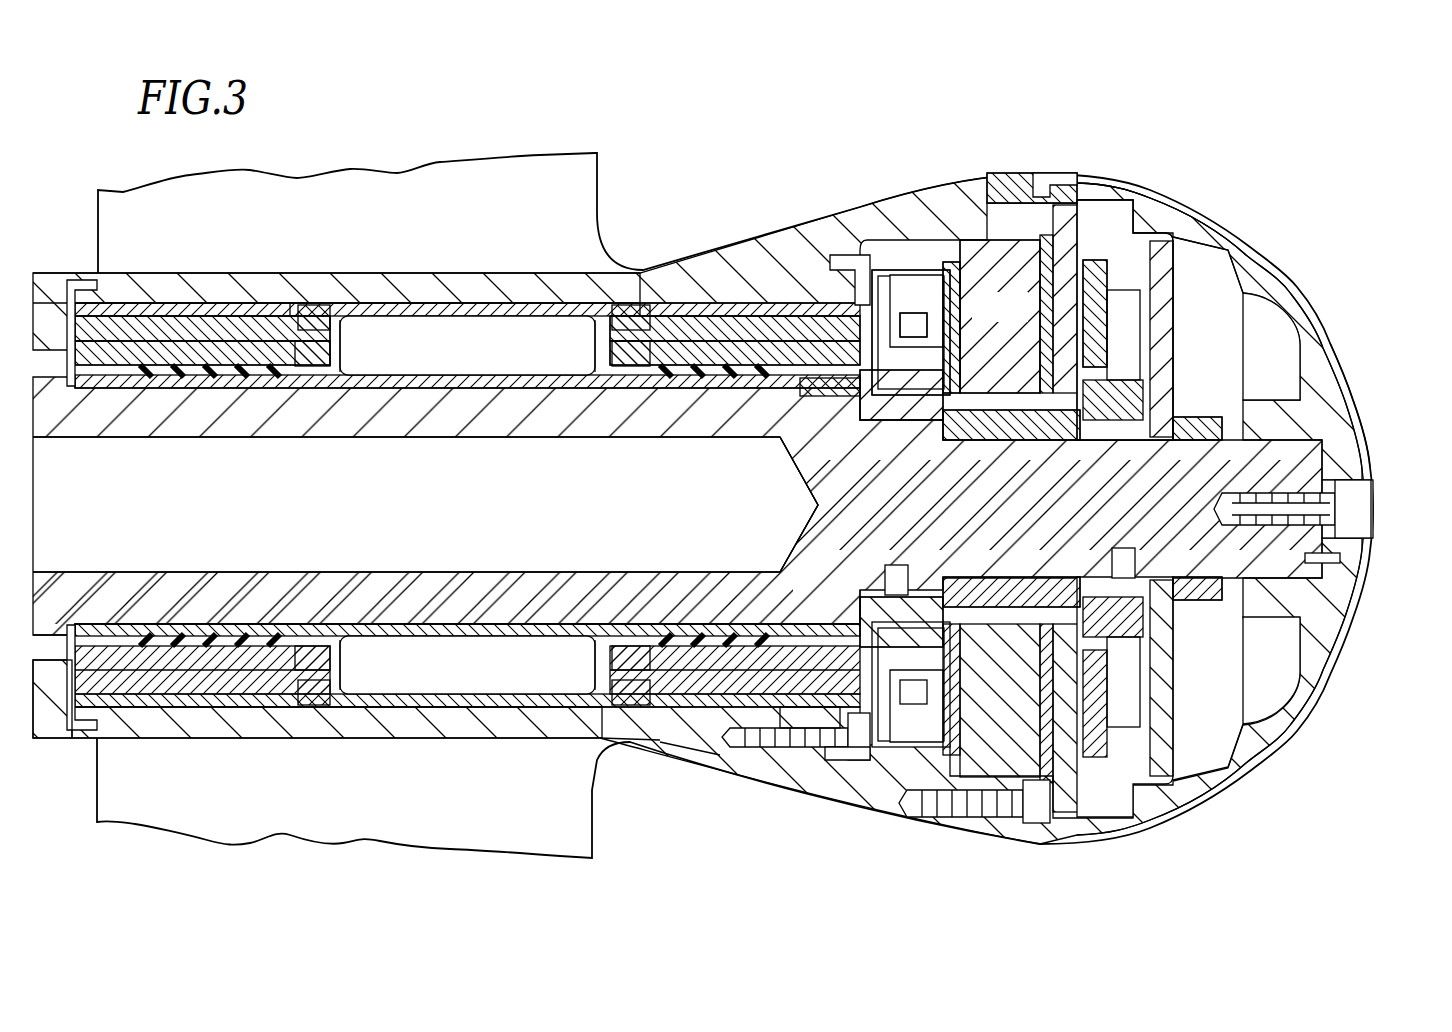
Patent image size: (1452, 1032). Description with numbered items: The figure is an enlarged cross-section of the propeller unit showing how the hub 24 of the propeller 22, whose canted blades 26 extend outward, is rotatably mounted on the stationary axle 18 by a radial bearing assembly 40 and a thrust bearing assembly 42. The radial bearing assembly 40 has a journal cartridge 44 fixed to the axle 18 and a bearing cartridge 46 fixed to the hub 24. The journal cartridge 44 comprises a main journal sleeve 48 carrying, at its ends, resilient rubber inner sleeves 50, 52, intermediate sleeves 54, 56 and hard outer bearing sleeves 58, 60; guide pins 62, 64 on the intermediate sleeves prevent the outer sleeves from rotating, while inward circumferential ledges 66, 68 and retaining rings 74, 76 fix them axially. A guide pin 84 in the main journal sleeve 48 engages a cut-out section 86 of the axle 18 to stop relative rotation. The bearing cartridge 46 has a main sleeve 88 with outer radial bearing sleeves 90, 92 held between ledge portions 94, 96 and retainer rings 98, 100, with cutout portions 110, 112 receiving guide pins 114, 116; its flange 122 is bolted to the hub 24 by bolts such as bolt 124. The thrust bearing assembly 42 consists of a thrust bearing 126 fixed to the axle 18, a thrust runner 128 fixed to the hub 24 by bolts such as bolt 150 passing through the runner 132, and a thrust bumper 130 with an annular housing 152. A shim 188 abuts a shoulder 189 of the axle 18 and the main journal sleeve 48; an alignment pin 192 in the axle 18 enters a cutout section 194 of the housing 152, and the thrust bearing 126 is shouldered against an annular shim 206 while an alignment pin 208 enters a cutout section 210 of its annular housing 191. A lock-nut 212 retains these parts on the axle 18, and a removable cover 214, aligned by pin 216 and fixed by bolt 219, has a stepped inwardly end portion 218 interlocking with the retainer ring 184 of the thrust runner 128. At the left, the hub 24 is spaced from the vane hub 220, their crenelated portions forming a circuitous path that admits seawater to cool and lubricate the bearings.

The stationary shaft or axle 18 is at (438, 440).
The propeller 22 is at (606, 170).
The hub 24 is at (708, 750).
The canted blades 26 is at (146, 248).
The radial bearing assembly 40 is at (514, 302).
The thrust bearing assembly 42 is at (950, 258).
The journal cartridge 44 is at (510, 392).
The bearing cartridge 46 is at (466, 300).
The main journal sleeve 48 is at (455, 384).
The inner sleeve 50 is at (730, 368).
The inner sleeve 52 is at (205, 366).
The intermediate sleeve 54 is at (700, 313).
The intermediate sleeve 56 is at (240, 313).
The outer bearing sleeve 58 is at (750, 313).
The outer bearing sleeve 60 is at (192, 313).
The guide pin 62 is at (632, 368).
The guide pin 64 is at (308, 368).
The inward circumferential ledge 66 is at (594, 346).
The inward circumferential ledge 68 is at (342, 346).
The retaining ring 74 is at (830, 296).
The retaining ring 76 is at (72, 282).
The guide pin 84 is at (806, 392).
The cut-out section 86 is at (790, 452).
The main sleeve 88 is at (462, 708).
The outer radial bearing sleeve 90 is at (674, 742).
The outer radial bearing sleeve 92 is at (214, 697).
The ledge portion 94 is at (594, 666).
The ledge portion 96 is at (342, 666).
The retainer ring 98 is at (810, 730).
The retainer ring 100 is at (80, 734).
The cutout portion 110 is at (612, 305).
The cutout portion 112 is at (330, 305).
The guide pin 114 is at (632, 300).
The guide pin 116 is at (305, 300).
The flange 122 is at (840, 762).
The bolt 124 is at (862, 762).
The thrust bearing 126 is at (1182, 252).
The thrust runner 128 is at (1010, 168).
The thrust bumper 130 is at (912, 268).
The runner 132 is at (1016, 322).
The bolt 150 is at (1005, 818).
The annular housing 152 is at (878, 274).
The retainer ring 184 is at (1050, 172).
The shim 188 is at (866, 422).
The shoulder 189 is at (862, 597).
The annular housing 191 is at (1160, 312).
The alignment pin 192 is at (896, 566).
The cutout section 194 is at (946, 578).
The annular shim 206 is at (985, 441).
The alignment pin 208 is at (1122, 549).
The cutout section 210 is at (1200, 601).
The lock-nut 212 is at (1200, 416).
The removable cover 214 is at (1345, 414).
The pin 216 is at (1341, 558).
The stepped inwardly end portion 218 is at (1095, 180).
The bolt 219 is at (1356, 488).
The vane hub 220 is at (42, 740).